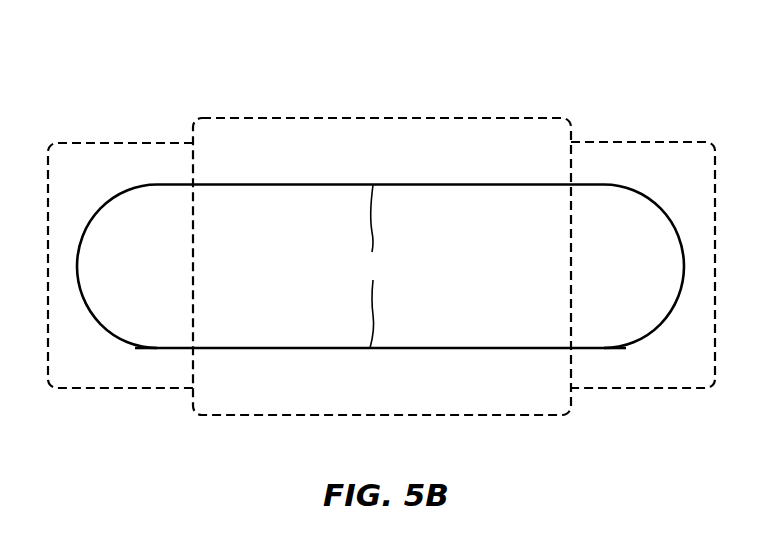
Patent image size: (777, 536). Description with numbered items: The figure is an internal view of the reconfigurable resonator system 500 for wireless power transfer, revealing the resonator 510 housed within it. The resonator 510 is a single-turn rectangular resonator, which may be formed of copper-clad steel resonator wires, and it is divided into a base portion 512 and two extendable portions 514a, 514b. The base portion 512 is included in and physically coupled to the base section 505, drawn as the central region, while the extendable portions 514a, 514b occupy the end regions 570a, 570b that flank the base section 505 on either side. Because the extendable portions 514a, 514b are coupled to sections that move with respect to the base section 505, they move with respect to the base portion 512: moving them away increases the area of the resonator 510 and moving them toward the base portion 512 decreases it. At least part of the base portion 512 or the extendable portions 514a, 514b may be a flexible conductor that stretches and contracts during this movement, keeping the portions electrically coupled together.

The resonator system 500 is at (158, 60).
The base section 505 is at (483, 118).
The resonator 510 is at (637, 190).
The base portion 512 is at (370, 266).
The extendable portion 514a is at (142, 348).
The extendable portion 514b is at (632, 348).
The first end region 570a is at (118, 143).
The second end region 570b is at (630, 142).